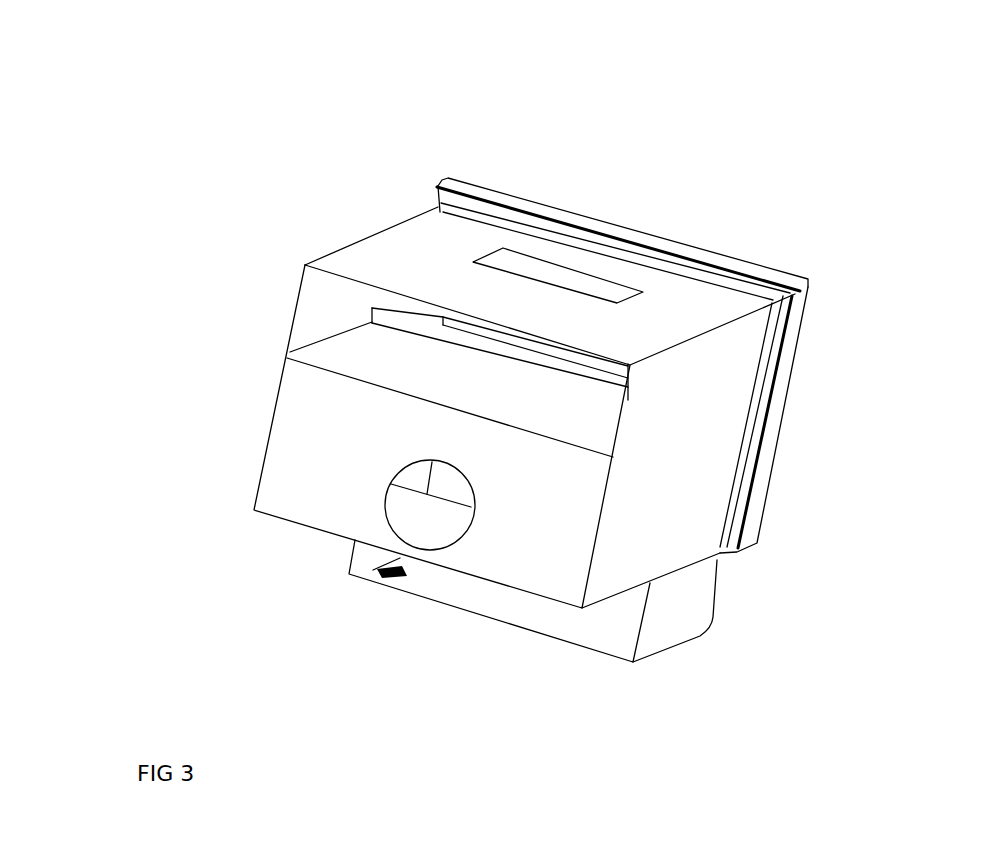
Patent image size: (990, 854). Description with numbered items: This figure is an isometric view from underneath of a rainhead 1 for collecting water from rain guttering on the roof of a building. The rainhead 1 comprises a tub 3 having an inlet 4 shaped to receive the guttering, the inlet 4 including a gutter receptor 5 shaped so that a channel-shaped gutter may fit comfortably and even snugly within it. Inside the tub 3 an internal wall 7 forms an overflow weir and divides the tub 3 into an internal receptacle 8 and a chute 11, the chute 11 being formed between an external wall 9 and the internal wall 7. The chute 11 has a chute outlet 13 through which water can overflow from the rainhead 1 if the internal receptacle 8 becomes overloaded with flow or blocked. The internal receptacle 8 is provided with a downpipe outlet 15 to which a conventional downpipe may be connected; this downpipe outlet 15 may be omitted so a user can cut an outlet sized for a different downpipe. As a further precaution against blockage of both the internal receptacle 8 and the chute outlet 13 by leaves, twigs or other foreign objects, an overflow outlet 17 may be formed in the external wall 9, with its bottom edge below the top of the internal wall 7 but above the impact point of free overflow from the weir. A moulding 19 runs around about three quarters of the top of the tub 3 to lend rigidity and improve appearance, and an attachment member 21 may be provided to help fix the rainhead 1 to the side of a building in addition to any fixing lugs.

The rainhead 1 is at (242, 470).
The tub 3 is at (701, 526).
The inlet 4 is at (544, 637).
The gutter receptor 5 is at (684, 626).
The internal wall 7 is at (365, 360).
The internal receptacle 8 is at (292, 440).
The external wall 9 is at (405, 252).
The chute 11 is at (577, 352).
The chute outlet 13 is at (315, 303).
The downpipe outlet 15 is at (396, 524).
The overflow outlet 17 is at (543, 277).
The moulding 19 is at (797, 393).
The attachment member 21 is at (420, 583).